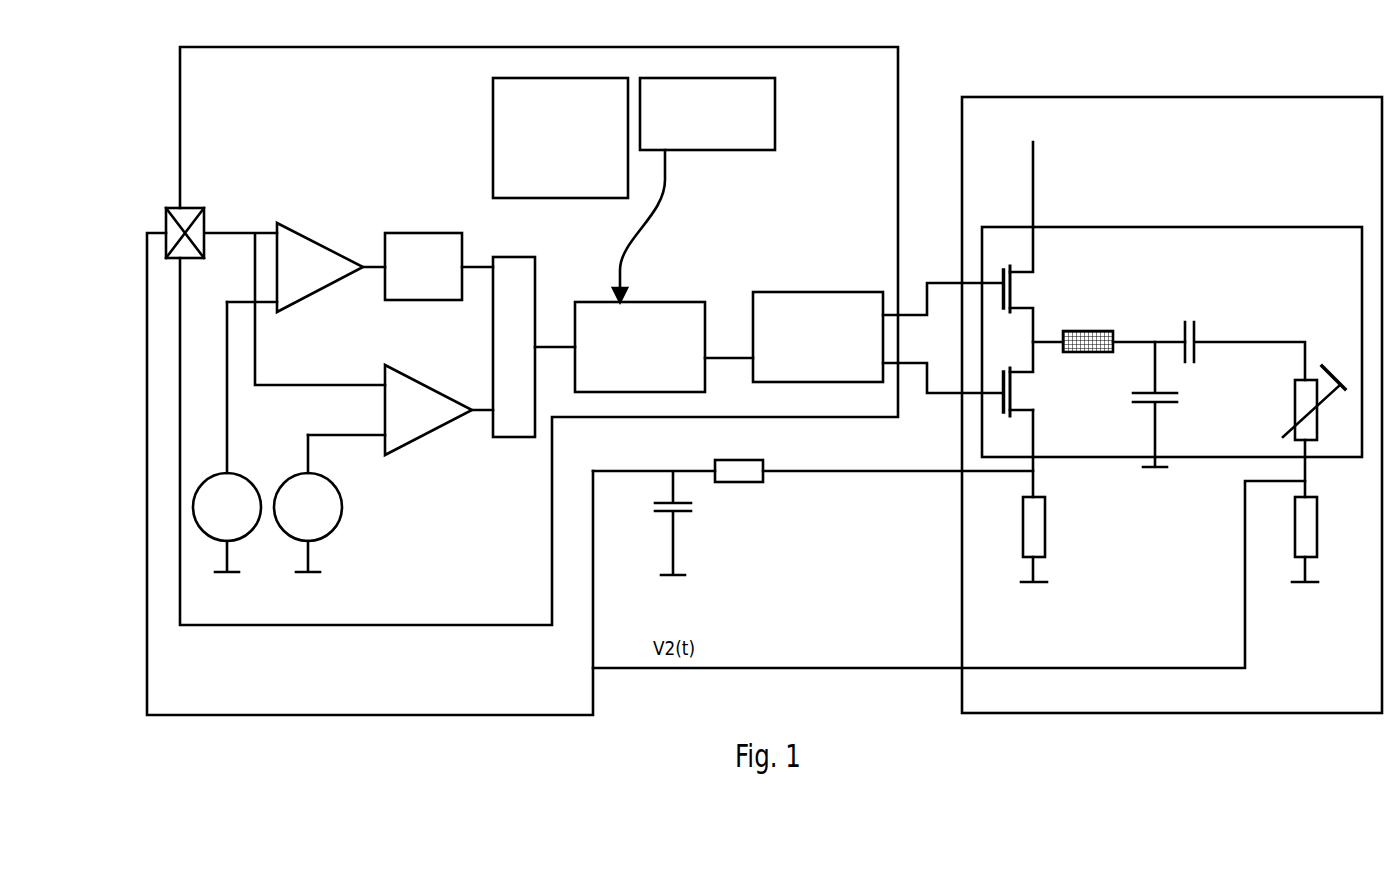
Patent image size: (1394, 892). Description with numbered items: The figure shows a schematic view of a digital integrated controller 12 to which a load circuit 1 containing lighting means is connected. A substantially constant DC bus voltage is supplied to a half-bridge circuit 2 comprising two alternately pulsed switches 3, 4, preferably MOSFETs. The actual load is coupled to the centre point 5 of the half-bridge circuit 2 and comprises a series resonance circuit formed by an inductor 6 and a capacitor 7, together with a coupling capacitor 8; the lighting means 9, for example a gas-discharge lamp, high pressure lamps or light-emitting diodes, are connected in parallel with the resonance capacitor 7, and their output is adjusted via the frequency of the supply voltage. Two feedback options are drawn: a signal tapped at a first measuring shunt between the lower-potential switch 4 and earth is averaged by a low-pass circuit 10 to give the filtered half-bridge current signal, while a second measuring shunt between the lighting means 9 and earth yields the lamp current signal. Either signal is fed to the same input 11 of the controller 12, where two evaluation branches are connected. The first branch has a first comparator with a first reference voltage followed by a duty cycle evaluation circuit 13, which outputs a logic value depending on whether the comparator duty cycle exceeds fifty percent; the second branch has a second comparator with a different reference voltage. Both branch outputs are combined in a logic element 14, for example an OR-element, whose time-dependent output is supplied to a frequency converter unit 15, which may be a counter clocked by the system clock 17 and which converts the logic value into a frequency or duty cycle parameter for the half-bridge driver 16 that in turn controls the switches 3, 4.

The load circuit 1 is at (1172, 377).
The half-bridge circuit 2 is at (1011, 298).
The switch 3 is at (1000, 295).
The switch 4 is at (1000, 398).
The centre point 5 is at (1035, 337).
The inductor 6 is at (1090, 331).
The capacitor 7 is at (1165, 406).
The coupling capacitor 8 is at (1196, 325).
The lighting means 9 is at (1293, 402).
The low-pass circuit 10 is at (707, 497).
The input 11 is at (166, 218).
The controller 12 is at (591, 312).
The duty cycle evaluation circuit 13 is at (423, 233).
The logic element 14 is at (535, 275).
The frequency converter unit 15 is at (675, 302).
The half-bridge driver 16 is at (843, 292).
The system clock 17 is at (775, 113).